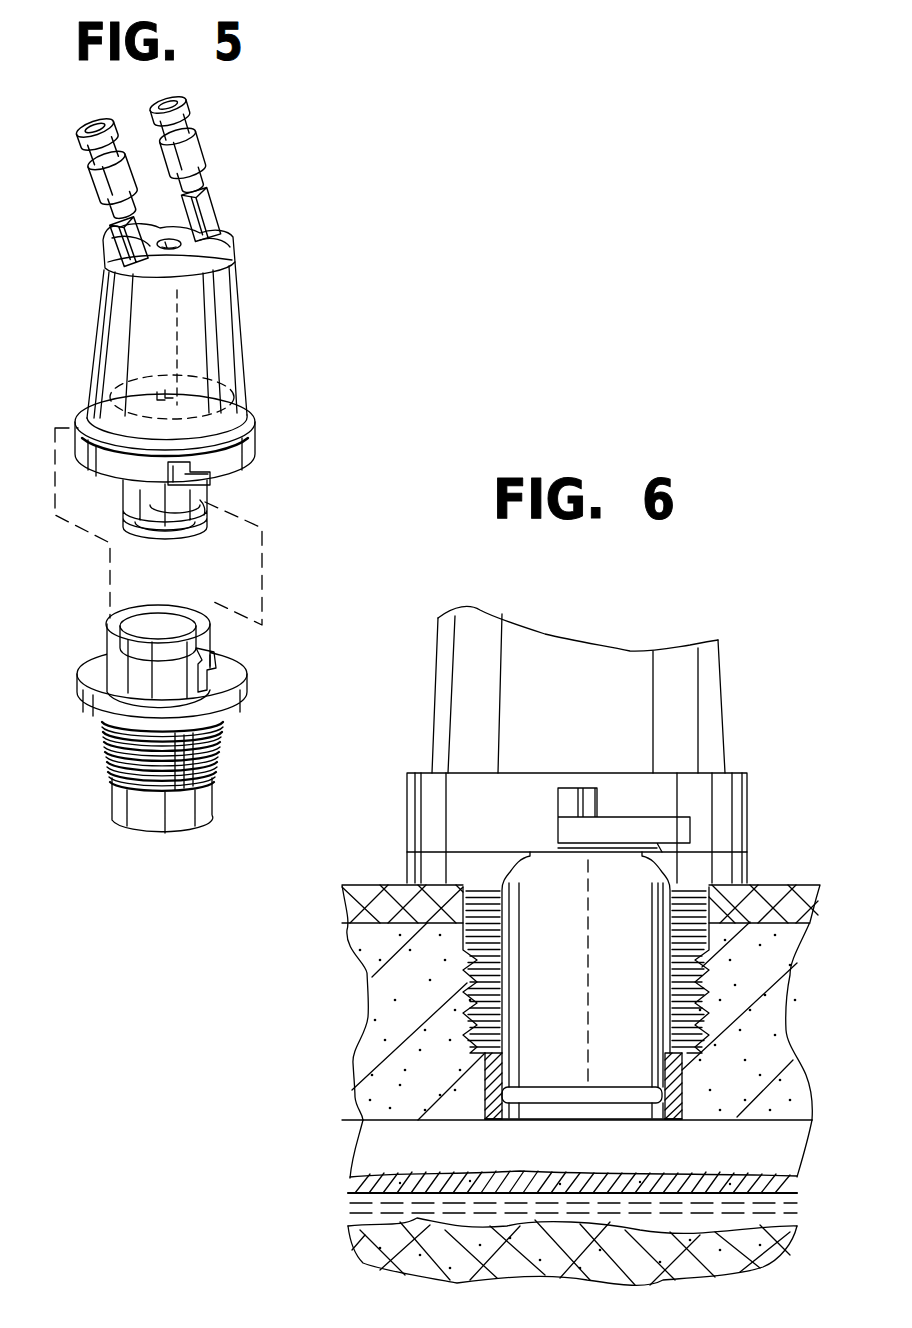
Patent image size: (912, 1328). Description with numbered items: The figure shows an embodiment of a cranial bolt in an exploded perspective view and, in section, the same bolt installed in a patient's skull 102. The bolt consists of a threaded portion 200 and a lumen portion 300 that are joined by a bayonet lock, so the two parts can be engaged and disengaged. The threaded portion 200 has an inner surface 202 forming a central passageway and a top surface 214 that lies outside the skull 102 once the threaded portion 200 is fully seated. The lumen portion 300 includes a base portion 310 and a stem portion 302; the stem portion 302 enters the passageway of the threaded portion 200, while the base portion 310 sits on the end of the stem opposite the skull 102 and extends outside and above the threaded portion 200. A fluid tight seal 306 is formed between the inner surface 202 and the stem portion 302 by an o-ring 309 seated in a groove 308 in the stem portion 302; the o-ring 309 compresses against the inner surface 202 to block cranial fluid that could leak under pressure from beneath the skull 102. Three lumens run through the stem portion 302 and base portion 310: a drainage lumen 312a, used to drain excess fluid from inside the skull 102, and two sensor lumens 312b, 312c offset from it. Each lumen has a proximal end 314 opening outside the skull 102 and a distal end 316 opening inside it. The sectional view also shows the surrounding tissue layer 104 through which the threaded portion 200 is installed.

In FIG. 5, the drainage lumen 312a is at (177, 270).
In FIG. 5, the sensor lumen 312b is at (113, 241).
In FIG. 5, the sensor lumen 312c is at (212, 222).
In FIG. 5, the proximal end 314 is at (236, 246).
In FIG. 5, the stem portion 302 is at (147, 498).
In FIG. 6, the stem portion 302 is at (612, 990).
In FIG. 5, the groove 308 is at (160, 508).
In FIG. 5, the o-ring 309 is at (201, 499).
In FIG. 6, the o-ring 309 is at (600, 1092).
In FIG. 5, the distal end 316 is at (185, 527).
In FIG. 6, the distal end 316 is at (523, 1120).
In FIG. 5, the inner surface 202 is at (143, 645).
In FIG. 5, the threaded portion 200 is at (109, 789).
In FIG. 6, the threaded portion 200 is at (458, 956).
In FIG. 6, the base portion 310 is at (556, 652).
In FIG. 6, the lumen portion 300 is at (768, 757).
In FIG. 6, the top surface 214 is at (426, 854).
In FIG. 6, the mortar layer 104 is at (698, 990).
In FIG. 6, the skull 102 is at (350, 1090).
In FIG. 6, the fluid tight seal 306 is at (540, 1118).